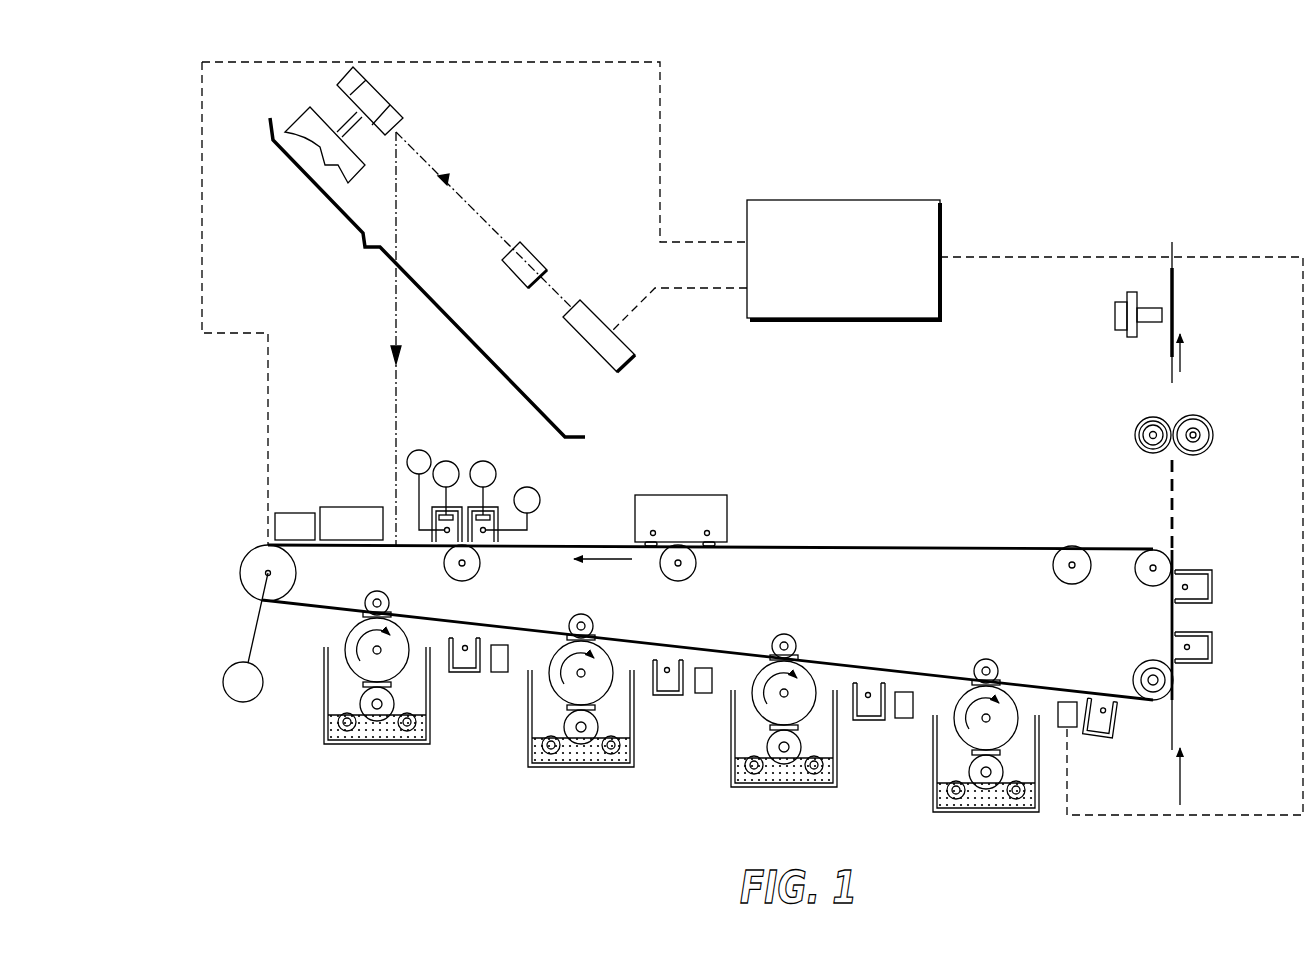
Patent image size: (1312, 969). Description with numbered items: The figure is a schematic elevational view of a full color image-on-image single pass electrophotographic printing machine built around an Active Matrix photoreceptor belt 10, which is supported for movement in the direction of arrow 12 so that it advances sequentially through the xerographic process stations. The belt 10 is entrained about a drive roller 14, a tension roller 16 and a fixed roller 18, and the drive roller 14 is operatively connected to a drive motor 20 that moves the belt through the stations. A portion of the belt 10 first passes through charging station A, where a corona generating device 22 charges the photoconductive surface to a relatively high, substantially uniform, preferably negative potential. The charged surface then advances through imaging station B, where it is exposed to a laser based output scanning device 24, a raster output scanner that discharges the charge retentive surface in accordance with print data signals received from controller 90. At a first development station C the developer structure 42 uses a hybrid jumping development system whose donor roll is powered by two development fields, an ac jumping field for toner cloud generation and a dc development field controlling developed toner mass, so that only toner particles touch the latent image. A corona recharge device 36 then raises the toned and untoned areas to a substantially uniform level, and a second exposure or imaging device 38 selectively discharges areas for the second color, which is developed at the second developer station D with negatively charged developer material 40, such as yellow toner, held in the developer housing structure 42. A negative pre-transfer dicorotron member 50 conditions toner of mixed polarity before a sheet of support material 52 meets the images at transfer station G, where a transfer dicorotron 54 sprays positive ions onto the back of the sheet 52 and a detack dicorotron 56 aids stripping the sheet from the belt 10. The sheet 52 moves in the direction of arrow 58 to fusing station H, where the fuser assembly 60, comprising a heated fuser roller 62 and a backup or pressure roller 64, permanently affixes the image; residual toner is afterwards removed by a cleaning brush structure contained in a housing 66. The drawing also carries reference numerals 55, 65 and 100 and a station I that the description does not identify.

The photoreceptor belt 10 is at (1013, 545).
The arrow 12 is at (592, 557).
The drive roller 14 is at (253, 560).
The tension roller 16 is at (1150, 668).
The fixed roller 18 is at (1150, 560).
The drive motor 20 is at (235, 697).
The corona generating device 22 is at (465, 458).
The laser based output scanning device 24 is at (363, 250).
The corona recharge device 36 is at (478, 643).
The second exposure or imaging device 38 is at (502, 673).
The developer material 40 is at (542, 745).
The developer housing structure 42 is at (417, 745).
The pre-transfer dicorotron member 50 is at (1110, 738).
The sheet of support material 52 is at (1173, 260).
The transfer dicorotron 54 is at (1212, 660).
The liquid developer material 55 is at (740, 770).
The detack dicorotron 56 is at (1208, 575).
The arrow 58 is at (1183, 355).
The fuser assembly 60 is at (1183, 402).
The heated fuser roller 62 is at (1142, 421).
The backup or pressure roller 64 is at (1212, 432).
The liquid developer material 65 is at (952, 788).
The housing 66 is at (678, 508).
The controller 90 is at (892, 210).
The sensor 100 is at (1104, 314).
The charging station A is at (528, 474).
The imaging station B is at (383, 495).
The first development station C is at (311, 771).
The second developer station D is at (538, 779).
The transfer station G is at (1222, 623).
The fusing station H is at (1218, 409).
The image conditioning station I is at (692, 491).